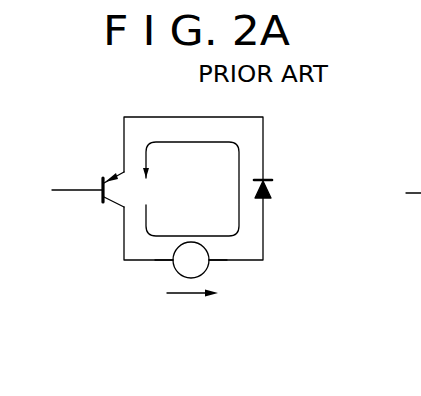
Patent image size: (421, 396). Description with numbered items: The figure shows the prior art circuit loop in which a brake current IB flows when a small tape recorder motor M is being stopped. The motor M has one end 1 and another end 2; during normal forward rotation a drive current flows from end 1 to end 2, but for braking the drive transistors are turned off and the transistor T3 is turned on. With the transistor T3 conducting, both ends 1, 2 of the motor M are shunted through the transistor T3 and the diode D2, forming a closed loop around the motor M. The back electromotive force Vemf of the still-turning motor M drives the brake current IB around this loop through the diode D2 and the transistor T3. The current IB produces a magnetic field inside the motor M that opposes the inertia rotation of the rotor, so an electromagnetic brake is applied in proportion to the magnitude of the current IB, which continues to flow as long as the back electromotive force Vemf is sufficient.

The transistor T3 is at (114, 175).
The diode D2 is at (274, 187).
The brake current IB is at (161, 172).
The motor M is at (191, 260).
The one end of the motor 1 is at (218, 273).
The other end of the motor 2 is at (163, 273).
The back electromotive force Vemf is at (189, 313).